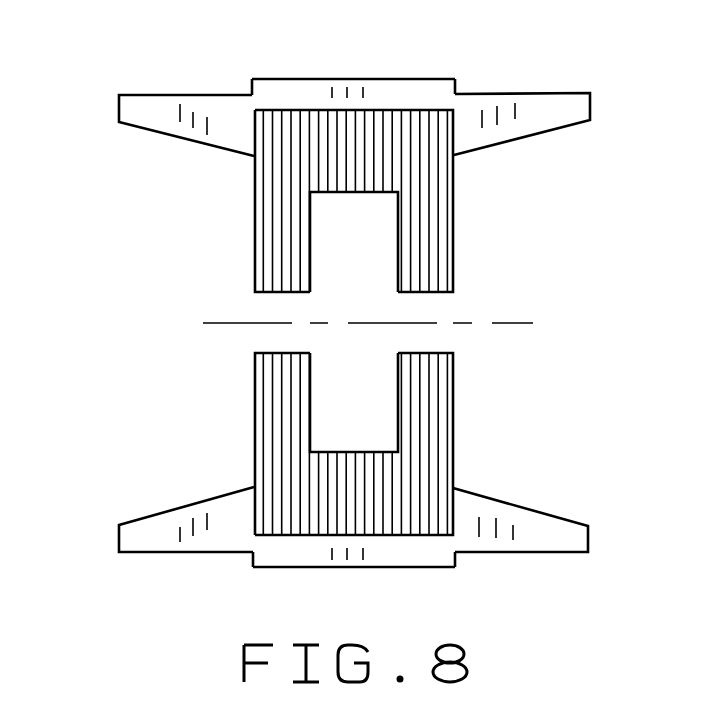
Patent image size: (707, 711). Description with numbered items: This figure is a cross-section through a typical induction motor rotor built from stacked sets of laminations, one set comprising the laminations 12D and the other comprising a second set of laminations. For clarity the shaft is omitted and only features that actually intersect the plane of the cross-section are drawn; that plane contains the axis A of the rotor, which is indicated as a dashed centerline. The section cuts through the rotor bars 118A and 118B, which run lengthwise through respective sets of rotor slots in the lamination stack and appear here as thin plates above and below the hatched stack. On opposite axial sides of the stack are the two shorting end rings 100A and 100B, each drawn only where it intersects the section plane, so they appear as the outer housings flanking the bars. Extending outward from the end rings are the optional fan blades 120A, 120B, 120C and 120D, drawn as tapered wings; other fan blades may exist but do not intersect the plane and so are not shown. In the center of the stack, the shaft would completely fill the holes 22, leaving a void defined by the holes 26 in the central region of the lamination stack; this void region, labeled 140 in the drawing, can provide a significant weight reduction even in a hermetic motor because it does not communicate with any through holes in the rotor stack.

The shorting end ring 100A is at (158, 107).
The shorting end ring 100B is at (556, 90).
The rotor bar 118A is at (318, 95).
The rotor bar 118B is at (317, 552).
The fan blade 120A is at (545, 113).
The fan blade 120B is at (535, 533).
The fan blade 120C is at (159, 120).
The fan blade 120D is at (152, 537).
The laminations 12D is at (255, 198).
The cavity 140 is at (383, 193).
The holes 26 is at (342, 260).
The holes 22 is at (428, 306).
The axis A is at (385, 322).